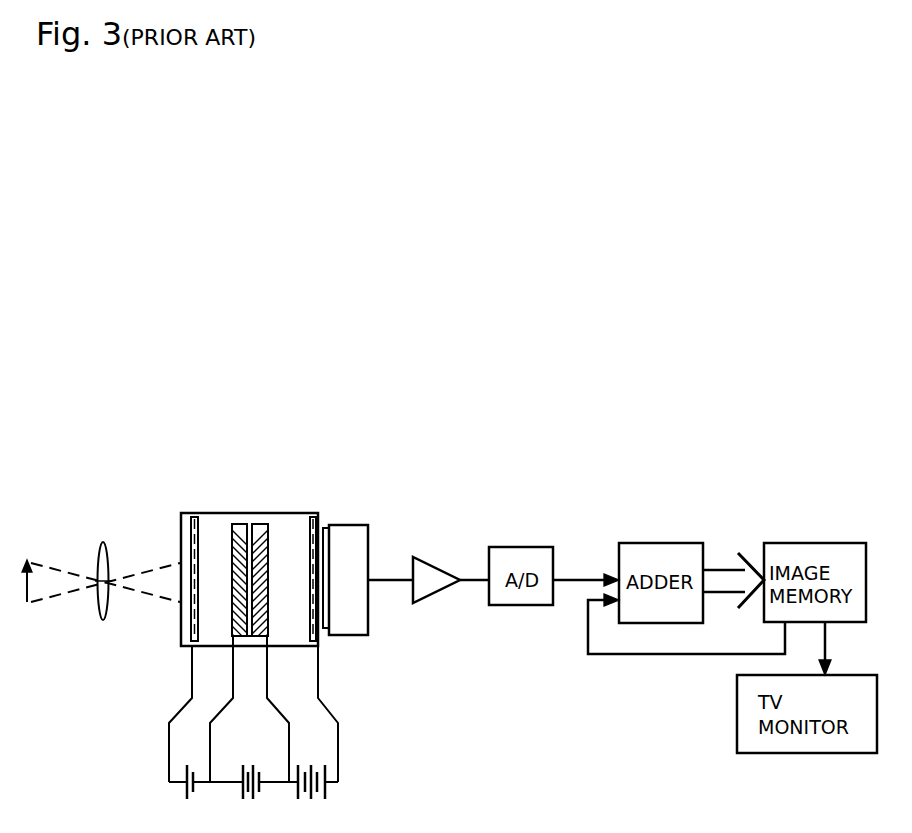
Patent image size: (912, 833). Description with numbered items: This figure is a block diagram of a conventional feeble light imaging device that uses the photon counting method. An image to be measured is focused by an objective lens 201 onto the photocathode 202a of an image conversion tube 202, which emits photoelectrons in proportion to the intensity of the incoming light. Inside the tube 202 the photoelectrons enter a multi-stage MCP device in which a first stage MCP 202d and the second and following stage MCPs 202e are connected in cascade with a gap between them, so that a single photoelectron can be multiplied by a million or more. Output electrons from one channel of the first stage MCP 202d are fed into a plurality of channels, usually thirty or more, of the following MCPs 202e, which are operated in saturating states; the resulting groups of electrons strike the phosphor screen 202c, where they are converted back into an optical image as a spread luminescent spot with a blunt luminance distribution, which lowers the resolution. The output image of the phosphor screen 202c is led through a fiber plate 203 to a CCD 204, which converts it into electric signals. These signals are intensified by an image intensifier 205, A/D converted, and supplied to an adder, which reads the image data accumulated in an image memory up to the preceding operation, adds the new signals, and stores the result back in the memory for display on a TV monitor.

The objective lens 201 is at (104, 542).
The image conversion tube 202 is at (229, 526).
The photocathode 202a is at (192, 512).
The phosphor screen 202c is at (316, 513).
The first stage MCP 202d is at (242, 516).
The second and following stage MCPs 202e is at (268, 562).
The fiber plate 203 is at (326, 632).
The CCD 204 is at (370, 636).
The image intensifier 205 is at (442, 566).